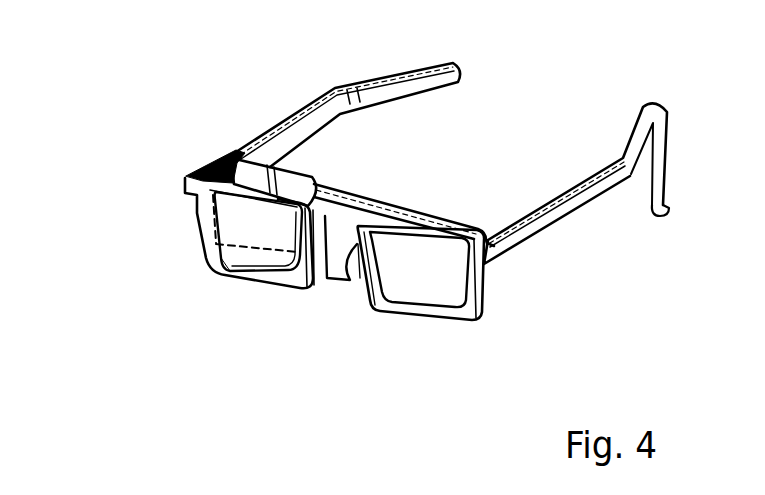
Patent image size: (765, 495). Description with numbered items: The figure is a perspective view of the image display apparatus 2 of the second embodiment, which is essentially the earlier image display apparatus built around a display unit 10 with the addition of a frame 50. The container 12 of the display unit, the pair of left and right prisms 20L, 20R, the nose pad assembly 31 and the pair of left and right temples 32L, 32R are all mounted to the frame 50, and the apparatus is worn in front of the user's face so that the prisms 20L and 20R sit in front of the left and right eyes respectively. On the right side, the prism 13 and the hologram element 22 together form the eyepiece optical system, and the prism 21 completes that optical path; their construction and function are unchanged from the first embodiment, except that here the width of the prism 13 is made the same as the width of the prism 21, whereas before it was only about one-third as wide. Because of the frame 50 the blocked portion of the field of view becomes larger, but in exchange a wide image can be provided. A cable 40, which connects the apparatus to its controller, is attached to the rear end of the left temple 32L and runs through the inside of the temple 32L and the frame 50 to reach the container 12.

The display unit 10 is at (217, 145).
The container 12 is at (289, 178).
The prism 13 is at (211, 212).
The right prism 20R is at (116, 252).
The left prism 20L is at (416, 298).
The prism 21 is at (232, 276).
The hologram element 22 is at (268, 243).
The nose pad assembly 31 is at (333, 282).
The right temple 32R is at (327, 116).
The left temple 32L is at (557, 194).
The cable 40 is at (653, 215).
The frame 50 is at (372, 193).
The image display apparatus 2 is at (452, 437).